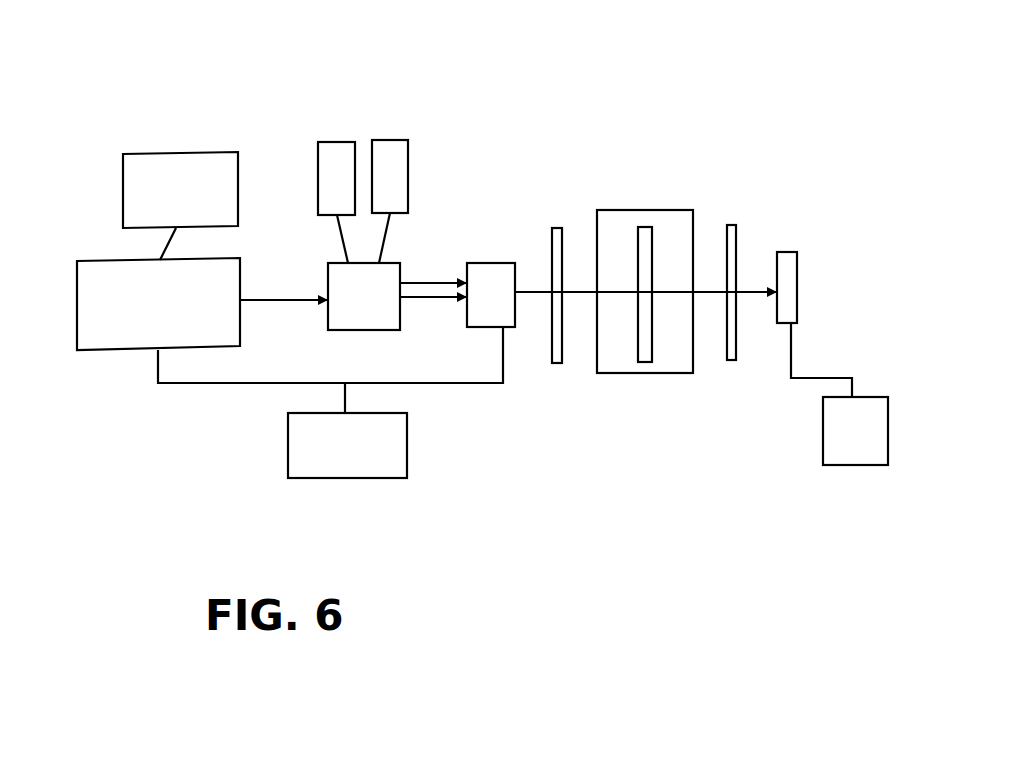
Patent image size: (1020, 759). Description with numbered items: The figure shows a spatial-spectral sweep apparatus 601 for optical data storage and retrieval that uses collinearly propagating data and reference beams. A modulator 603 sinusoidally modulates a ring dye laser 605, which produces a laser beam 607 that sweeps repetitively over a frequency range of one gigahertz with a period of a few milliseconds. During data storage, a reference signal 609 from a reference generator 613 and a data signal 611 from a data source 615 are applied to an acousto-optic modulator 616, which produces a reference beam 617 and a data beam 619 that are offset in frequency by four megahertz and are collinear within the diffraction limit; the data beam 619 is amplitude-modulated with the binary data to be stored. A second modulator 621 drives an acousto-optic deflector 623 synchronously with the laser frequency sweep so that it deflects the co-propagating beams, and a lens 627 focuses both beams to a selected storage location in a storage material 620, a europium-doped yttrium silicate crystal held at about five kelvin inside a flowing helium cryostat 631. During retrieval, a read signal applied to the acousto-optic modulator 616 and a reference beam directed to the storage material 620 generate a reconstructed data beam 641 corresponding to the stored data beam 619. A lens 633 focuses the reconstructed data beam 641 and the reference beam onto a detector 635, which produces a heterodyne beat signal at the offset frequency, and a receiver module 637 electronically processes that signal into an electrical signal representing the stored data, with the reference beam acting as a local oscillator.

The spatial-spectral sweep apparatus 601 is at (668, 77).
The modulator 603 is at (123, 186).
The ring dye laser 605 is at (77, 326).
The laser beam 607 is at (296, 298).
The reference signal 609 is at (341, 244).
The data signal 611 is at (385, 241).
The reference generator 613 is at (336, 142).
The data source 615 is at (388, 140).
The acousto-optic modulator 616 is at (373, 332).
The reference beam 617 is at (442, 299).
The data beam 619 is at (428, 280).
The storage material 620 is at (638, 333).
The modulator 621 is at (288, 459).
The acousto-optic deflector 623 is at (488, 263).
The lens 627 is at (553, 228).
The flowing helium cryostat 631 is at (624, 210).
The lens 633 is at (731, 225).
The detector 635 is at (797, 287).
The receiver module 637 is at (823, 447).
The reconstructed data beam 641 is at (742, 285).